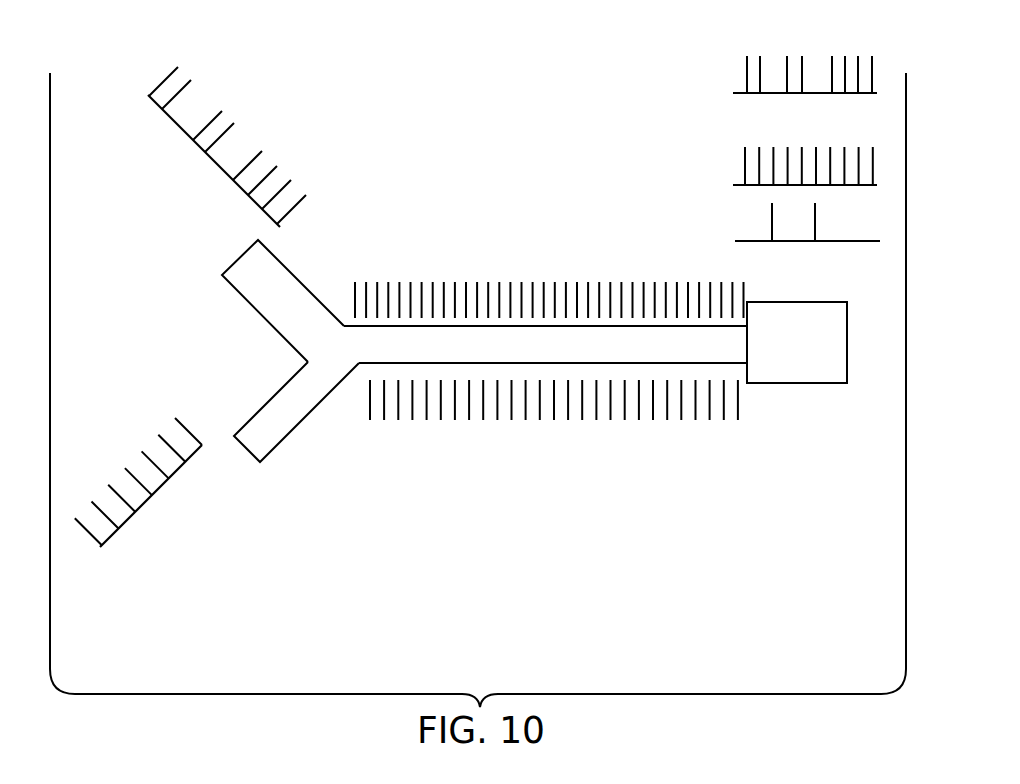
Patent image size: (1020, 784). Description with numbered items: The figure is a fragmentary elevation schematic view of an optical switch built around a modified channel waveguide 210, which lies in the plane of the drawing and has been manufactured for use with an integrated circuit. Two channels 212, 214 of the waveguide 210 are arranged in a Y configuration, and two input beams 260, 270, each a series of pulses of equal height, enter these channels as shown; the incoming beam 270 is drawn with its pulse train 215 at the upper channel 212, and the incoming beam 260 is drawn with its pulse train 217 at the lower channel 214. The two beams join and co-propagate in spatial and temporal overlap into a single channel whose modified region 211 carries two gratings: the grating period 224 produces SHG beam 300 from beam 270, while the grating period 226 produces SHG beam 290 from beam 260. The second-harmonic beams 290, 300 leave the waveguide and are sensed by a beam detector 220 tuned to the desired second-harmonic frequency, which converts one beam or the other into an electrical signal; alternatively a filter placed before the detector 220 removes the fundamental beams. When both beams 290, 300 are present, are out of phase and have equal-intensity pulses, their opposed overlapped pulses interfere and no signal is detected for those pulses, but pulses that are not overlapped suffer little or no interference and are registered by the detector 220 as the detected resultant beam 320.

The channel waveguide 210 is at (462, 400).
The modified region of waveguide combining both gratings 211 is at (543, 400).
The channel 212 is at (253, 306).
The channel 214 is at (273, 397).
The wavefronts of beam 270 215 is at (203, 151).
The wavefronts of beam 260 217 is at (133, 514).
The beam detector 220 is at (782, 383).
The grating period that produces beam 300 from beam 270 224 is at (373, 287).
The grating period that produces beam 290 from beam 260 226 is at (390, 412).
The beam 260 is at (245, 447).
The beam 270 is at (240, 255).
The SHG beam 290 is at (865, 155).
The SHG beam 300 is at (865, 62).
The resultant beam 320 is at (748, 243).